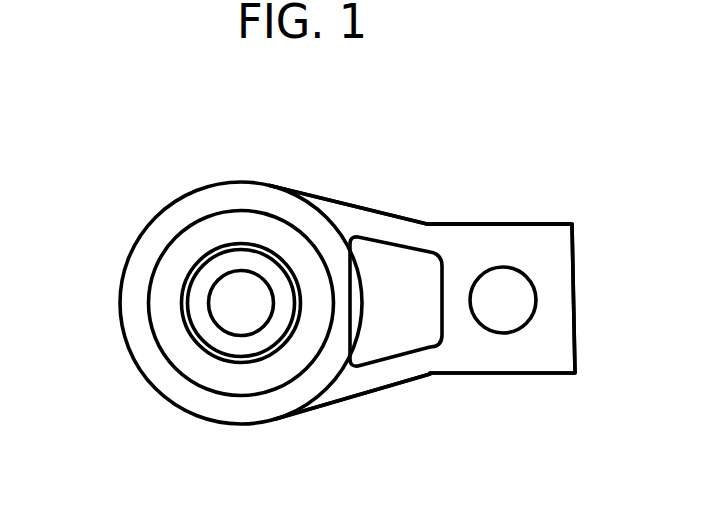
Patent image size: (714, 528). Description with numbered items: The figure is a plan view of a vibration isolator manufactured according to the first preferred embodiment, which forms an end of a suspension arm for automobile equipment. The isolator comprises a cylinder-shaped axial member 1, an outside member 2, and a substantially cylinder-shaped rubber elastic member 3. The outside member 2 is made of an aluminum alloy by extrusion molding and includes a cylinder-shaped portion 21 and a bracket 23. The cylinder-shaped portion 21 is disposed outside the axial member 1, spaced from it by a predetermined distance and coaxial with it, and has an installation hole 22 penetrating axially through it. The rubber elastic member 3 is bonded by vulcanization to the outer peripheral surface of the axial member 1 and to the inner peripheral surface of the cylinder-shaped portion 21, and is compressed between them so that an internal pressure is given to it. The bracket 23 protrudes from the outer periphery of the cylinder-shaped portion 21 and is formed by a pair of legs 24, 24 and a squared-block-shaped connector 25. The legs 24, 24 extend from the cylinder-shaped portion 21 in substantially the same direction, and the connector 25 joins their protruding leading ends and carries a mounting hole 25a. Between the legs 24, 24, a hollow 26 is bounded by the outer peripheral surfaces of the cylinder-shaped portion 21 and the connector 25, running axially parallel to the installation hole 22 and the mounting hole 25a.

The axial member 1 is at (197, 287).
The outside member 2 is at (302, 194).
The rubber elastic member 3 is at (177, 343).
The cylinder-shaped portion 21 is at (237, 200).
The installation hole 22 is at (198, 233).
The bracket 23 is at (446, 222).
The legs 24 is at (387, 229).
The connector 25 is at (530, 242).
The mounting hole 25a is at (526, 319).
The hollow 26 is at (420, 343).